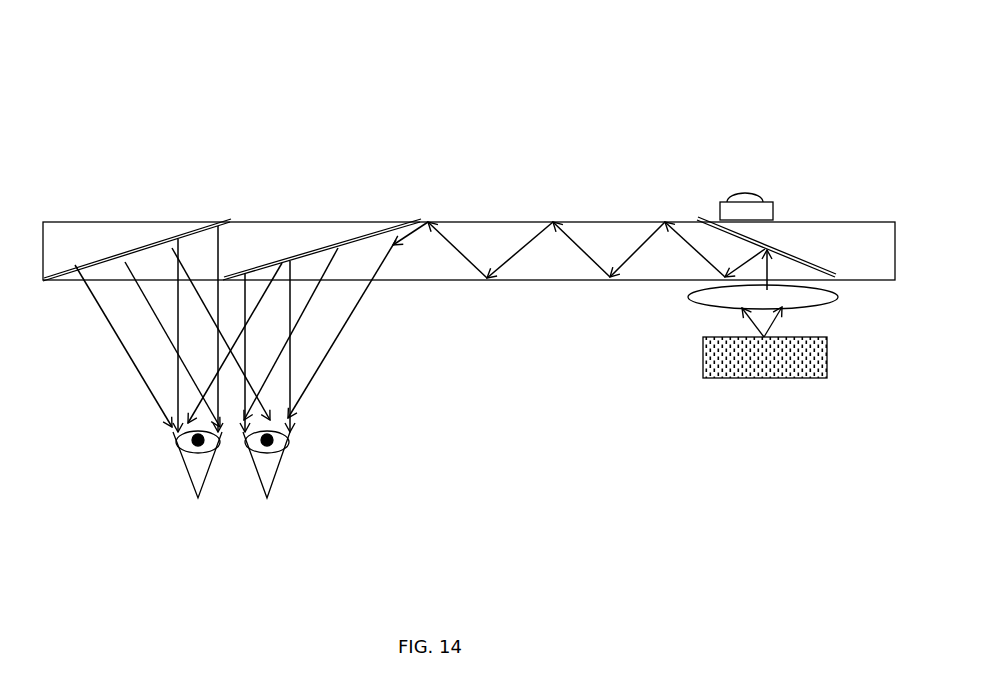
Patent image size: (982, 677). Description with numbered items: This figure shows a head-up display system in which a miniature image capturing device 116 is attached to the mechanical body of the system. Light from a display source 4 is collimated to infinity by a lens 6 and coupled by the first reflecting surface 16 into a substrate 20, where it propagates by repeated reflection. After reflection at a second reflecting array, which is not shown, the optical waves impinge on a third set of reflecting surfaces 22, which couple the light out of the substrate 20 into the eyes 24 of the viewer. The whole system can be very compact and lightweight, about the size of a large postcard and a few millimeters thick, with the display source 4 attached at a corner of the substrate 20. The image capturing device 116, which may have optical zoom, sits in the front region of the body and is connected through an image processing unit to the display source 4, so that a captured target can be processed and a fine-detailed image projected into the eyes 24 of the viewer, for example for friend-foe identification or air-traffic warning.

The display source 4 is at (765, 358).
The lens 6 is at (785, 298).
The first reflecting surface 16 is at (770, 177).
The substrate 20 is at (469, 165).
The third set of reflecting surfaces 22 is at (232, 174).
The eyes of the viewer 24 is at (231, 486).
The miniature image capturing device 116 is at (766, 130).